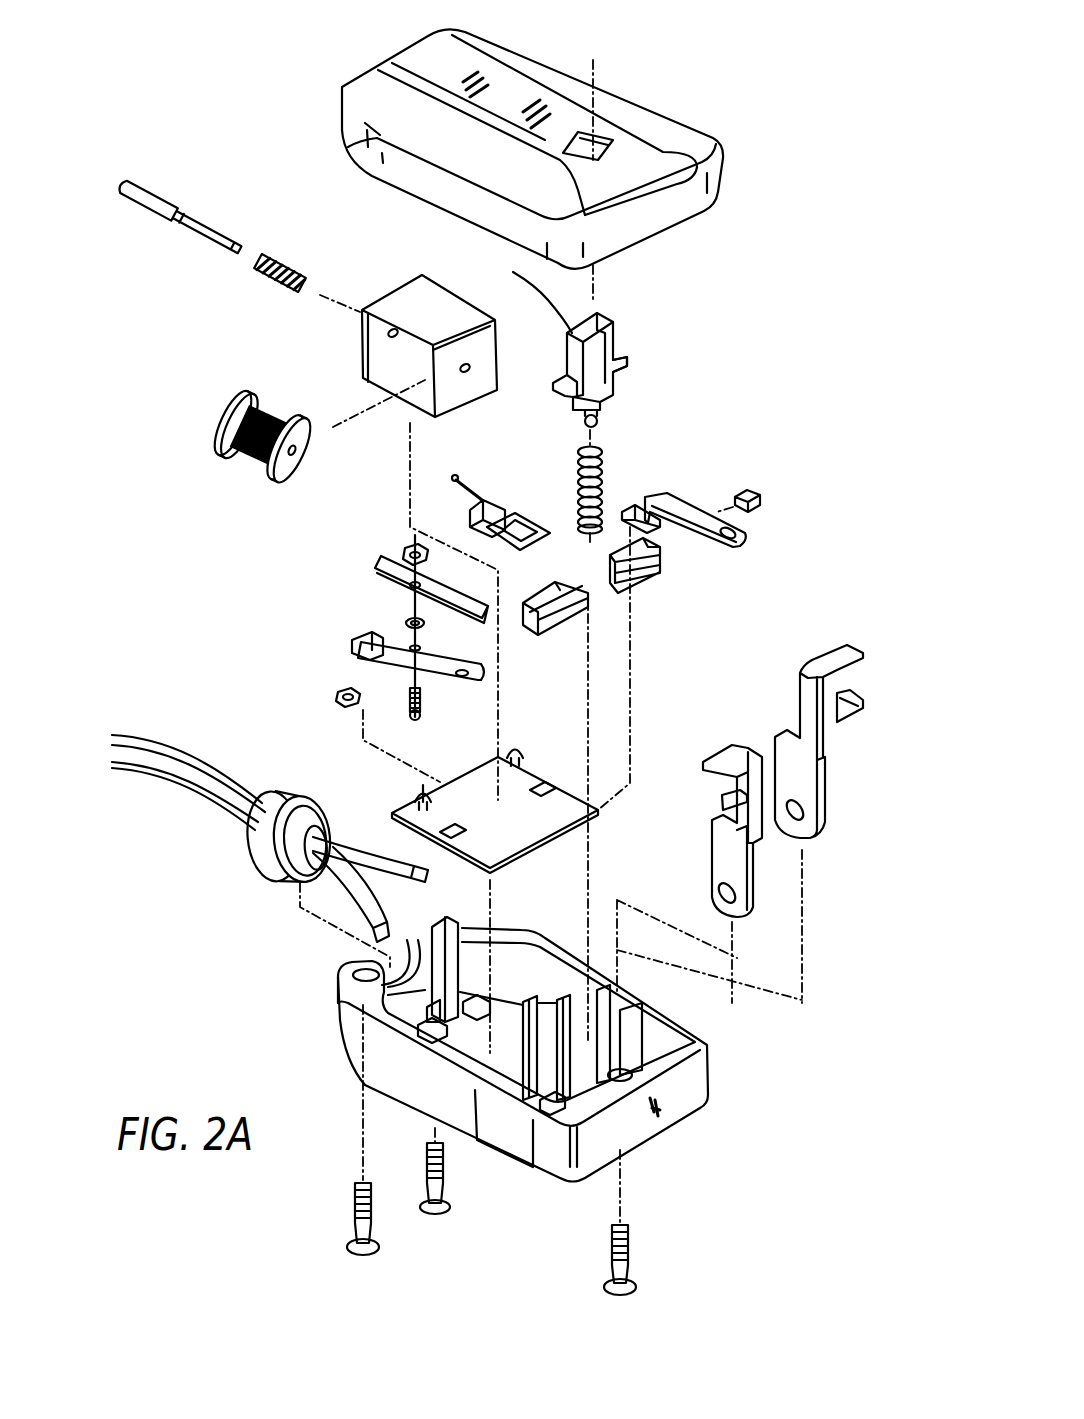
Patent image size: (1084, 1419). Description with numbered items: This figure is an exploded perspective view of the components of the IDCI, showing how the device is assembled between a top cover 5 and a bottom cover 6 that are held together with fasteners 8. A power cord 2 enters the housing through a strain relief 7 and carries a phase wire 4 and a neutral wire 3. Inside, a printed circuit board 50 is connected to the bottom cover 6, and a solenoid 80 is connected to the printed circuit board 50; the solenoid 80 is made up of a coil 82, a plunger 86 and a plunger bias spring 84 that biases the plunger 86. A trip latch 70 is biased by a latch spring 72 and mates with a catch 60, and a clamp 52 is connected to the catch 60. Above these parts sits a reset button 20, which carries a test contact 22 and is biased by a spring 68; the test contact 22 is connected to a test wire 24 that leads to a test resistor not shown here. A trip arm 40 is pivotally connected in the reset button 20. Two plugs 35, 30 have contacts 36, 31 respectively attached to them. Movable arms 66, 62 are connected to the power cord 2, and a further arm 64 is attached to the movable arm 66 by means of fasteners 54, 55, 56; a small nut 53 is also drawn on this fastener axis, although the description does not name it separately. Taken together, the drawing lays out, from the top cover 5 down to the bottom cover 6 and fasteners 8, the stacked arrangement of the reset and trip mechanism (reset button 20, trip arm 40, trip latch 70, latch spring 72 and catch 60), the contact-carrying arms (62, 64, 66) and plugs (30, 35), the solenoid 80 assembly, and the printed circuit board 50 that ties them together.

The power cord 2 is at (123, 737).
The neutral wire 3 is at (367, 900).
The phase wire 4 is at (403, 873).
The top cover 5 is at (505, 55).
The bottom cover 6 is at (677, 1100).
The strain relief 7 is at (255, 845).
The fasteners 8 is at (447, 1210).
The reset button 20 is at (625, 363).
The test contact 22 is at (613, 393).
The test wire 24 is at (530, 308).
The plug 30 is at (820, 810).
The contact 31 is at (850, 692).
The plug 35 is at (755, 888).
The contact 36 is at (722, 797).
The trip arm 40 is at (618, 340).
The printed circuit board 50 is at (530, 829).
The clamp 52 is at (760, 493).
The nut 53 is at (337, 700).
The fastener 54 is at (420, 715).
The fastener 55 is at (407, 622).
The fastener 56 is at (412, 548).
The catch 60 is at (653, 583).
The movable arm 62 is at (688, 500).
The arm 64 is at (390, 568).
The movable arm 66 is at (357, 655).
The spring 68 is at (605, 462).
The trip latch 70 is at (510, 515).
The latch spring 72 is at (445, 465).
The solenoid 80 is at (438, 318).
The coil 82 is at (222, 393).
The plunger bias spring 84 is at (292, 258).
The plunger 86 is at (178, 207).